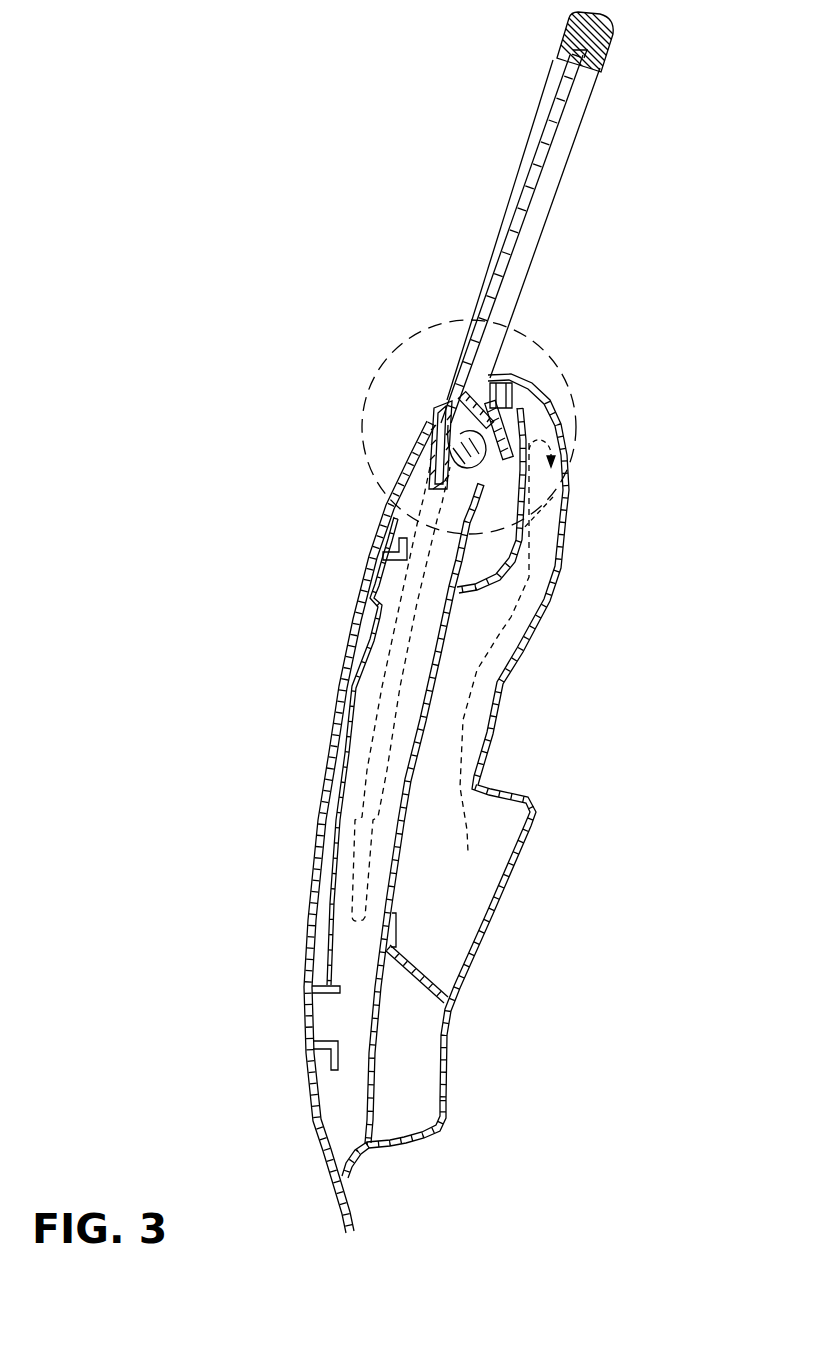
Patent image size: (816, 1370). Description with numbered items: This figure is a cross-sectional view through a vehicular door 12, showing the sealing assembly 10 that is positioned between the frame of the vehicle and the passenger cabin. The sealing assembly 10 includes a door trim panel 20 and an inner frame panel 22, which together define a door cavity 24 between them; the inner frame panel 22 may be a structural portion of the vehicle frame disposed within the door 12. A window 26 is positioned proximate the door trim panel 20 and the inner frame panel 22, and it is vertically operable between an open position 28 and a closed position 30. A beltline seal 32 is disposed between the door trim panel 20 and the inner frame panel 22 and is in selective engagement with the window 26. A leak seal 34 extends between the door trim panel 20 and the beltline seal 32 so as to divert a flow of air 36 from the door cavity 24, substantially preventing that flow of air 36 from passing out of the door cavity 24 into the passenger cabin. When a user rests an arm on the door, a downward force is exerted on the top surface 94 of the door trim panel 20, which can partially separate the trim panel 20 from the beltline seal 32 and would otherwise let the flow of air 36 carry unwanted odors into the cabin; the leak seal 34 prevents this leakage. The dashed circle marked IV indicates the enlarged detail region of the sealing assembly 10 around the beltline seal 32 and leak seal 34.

The sealing assembly 10 is at (515, 372).
The vehicular door 12 is at (257, 623).
The door trim panel 20 is at (565, 432).
The inner frame panel 22 is at (467, 510).
The door cavity 24 is at (461, 642).
The window 26 is at (532, 177).
The open position 28 is at (370, 727).
The closed position 30 is at (497, 230).
The beltline seal 32 is at (432, 427).
The leak seal 34 is at (520, 404).
The flow of air 36 is at (523, 570).
The top surface 94 is at (528, 396).
The detail view circle IV is at (572, 382).